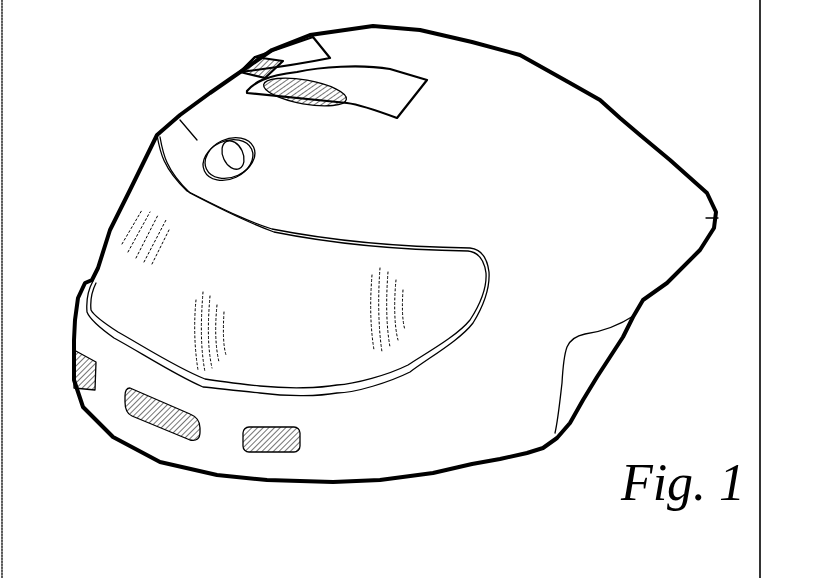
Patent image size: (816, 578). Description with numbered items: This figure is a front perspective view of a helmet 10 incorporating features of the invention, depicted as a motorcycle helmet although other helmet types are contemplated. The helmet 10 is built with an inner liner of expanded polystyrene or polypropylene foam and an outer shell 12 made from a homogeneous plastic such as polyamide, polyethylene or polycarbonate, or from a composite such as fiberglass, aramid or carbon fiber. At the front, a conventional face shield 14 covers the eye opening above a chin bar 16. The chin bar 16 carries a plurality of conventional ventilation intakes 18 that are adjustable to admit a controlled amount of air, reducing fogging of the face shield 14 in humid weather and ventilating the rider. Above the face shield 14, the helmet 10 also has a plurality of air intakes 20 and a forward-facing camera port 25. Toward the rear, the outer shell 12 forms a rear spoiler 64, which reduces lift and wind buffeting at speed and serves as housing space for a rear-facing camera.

The helmet 10 is at (604, 77).
The outer shell 12 is at (613, 140).
The face shield 14 is at (140, 222).
The chin bar 16 is at (100, 408).
The ventilation intakes 18 is at (72, 366).
The air intakes 20 is at (257, 58).
The forward-facing camera port 25 is at (180, 120).
The rear spoiler 64 is at (716, 218).